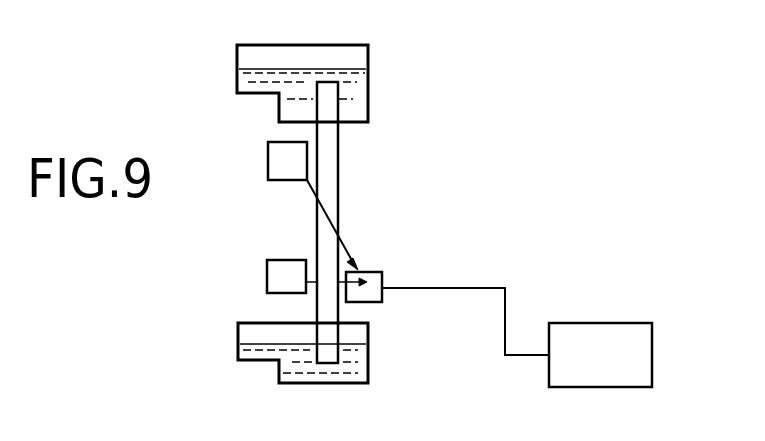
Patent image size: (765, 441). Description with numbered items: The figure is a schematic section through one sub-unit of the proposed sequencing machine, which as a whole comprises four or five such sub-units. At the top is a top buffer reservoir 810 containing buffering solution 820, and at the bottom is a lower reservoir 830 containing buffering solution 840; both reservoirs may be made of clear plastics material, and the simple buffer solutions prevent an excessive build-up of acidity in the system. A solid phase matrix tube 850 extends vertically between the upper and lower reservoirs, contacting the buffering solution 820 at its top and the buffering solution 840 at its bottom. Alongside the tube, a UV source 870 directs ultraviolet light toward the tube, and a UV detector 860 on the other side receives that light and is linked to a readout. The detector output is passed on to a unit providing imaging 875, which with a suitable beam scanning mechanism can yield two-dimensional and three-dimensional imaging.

The top buffer reservoir 810 is at (353, 45).
The buffering solution 820 is at (369, 98).
The lower reservoir 830 is at (369, 336).
The buffering solution 840 is at (255, 349).
The solid phase matrix tube 850 is at (339, 198).
The UV detector 860 is at (378, 271).
The UV source 870 is at (280, 180).
The imaging 875 is at (605, 323).